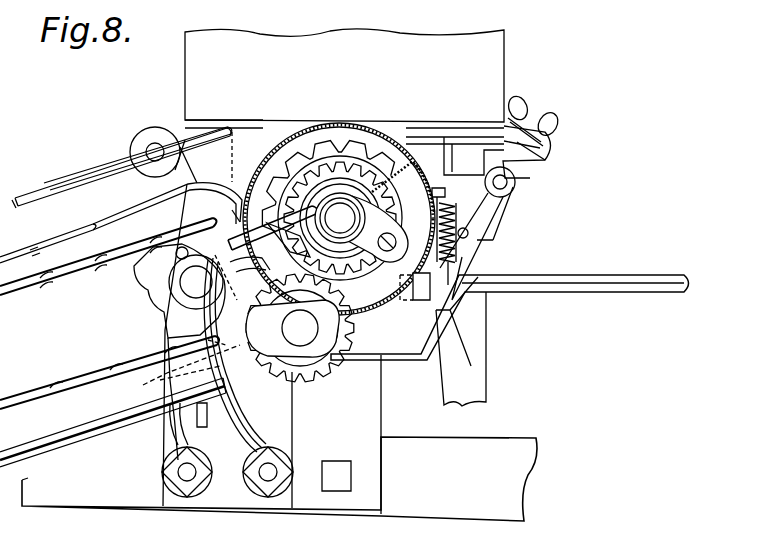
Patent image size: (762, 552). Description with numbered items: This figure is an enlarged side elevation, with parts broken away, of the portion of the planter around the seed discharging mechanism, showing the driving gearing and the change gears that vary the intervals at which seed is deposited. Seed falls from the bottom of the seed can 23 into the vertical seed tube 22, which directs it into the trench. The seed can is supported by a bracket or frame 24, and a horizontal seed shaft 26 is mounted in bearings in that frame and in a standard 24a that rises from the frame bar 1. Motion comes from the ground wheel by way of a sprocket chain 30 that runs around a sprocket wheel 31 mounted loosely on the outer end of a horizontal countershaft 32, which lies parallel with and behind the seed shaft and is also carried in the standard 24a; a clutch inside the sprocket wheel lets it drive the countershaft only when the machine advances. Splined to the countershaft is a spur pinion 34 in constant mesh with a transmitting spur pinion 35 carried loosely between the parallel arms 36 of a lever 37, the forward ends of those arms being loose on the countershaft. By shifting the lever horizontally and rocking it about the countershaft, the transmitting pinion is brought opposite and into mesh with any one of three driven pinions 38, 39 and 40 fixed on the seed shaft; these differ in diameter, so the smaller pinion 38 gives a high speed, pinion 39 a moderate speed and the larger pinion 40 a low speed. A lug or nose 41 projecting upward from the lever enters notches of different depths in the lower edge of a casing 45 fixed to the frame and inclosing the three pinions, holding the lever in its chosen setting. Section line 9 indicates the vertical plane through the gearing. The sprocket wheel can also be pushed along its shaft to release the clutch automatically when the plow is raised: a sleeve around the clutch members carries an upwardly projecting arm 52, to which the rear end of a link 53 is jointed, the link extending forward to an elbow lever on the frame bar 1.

The frame bar 1 is at (73, 486).
The section line 9 is at (341, 520).
The seed tube 22 is at (487, 350).
The seed can 23 is at (344, 102).
The bracket or frame 24 is at (361, 446).
The standard 24a is at (170, 423).
The seed shaft 26 is at (352, 185).
The sprocket chain 30 is at (67, 277).
The sprocket wheel 31 is at (150, 280).
The countershaft 32 is at (190, 285).
The spur pinion 34 is at (177, 372).
The transmitting spur pinion 35 is at (316, 382).
The parallel arms 36 is at (238, 362).
The lever 37 is at (352, 330).
The driven pinion 38 is at (370, 183).
The driven pinion 39 is at (345, 210).
The driven pinion 40 is at (297, 163).
The lug or nose 41 is at (470, 296).
The casing 45 is at (341, 137).
The arm 52 is at (228, 140).
The link 53 is at (72, 180).